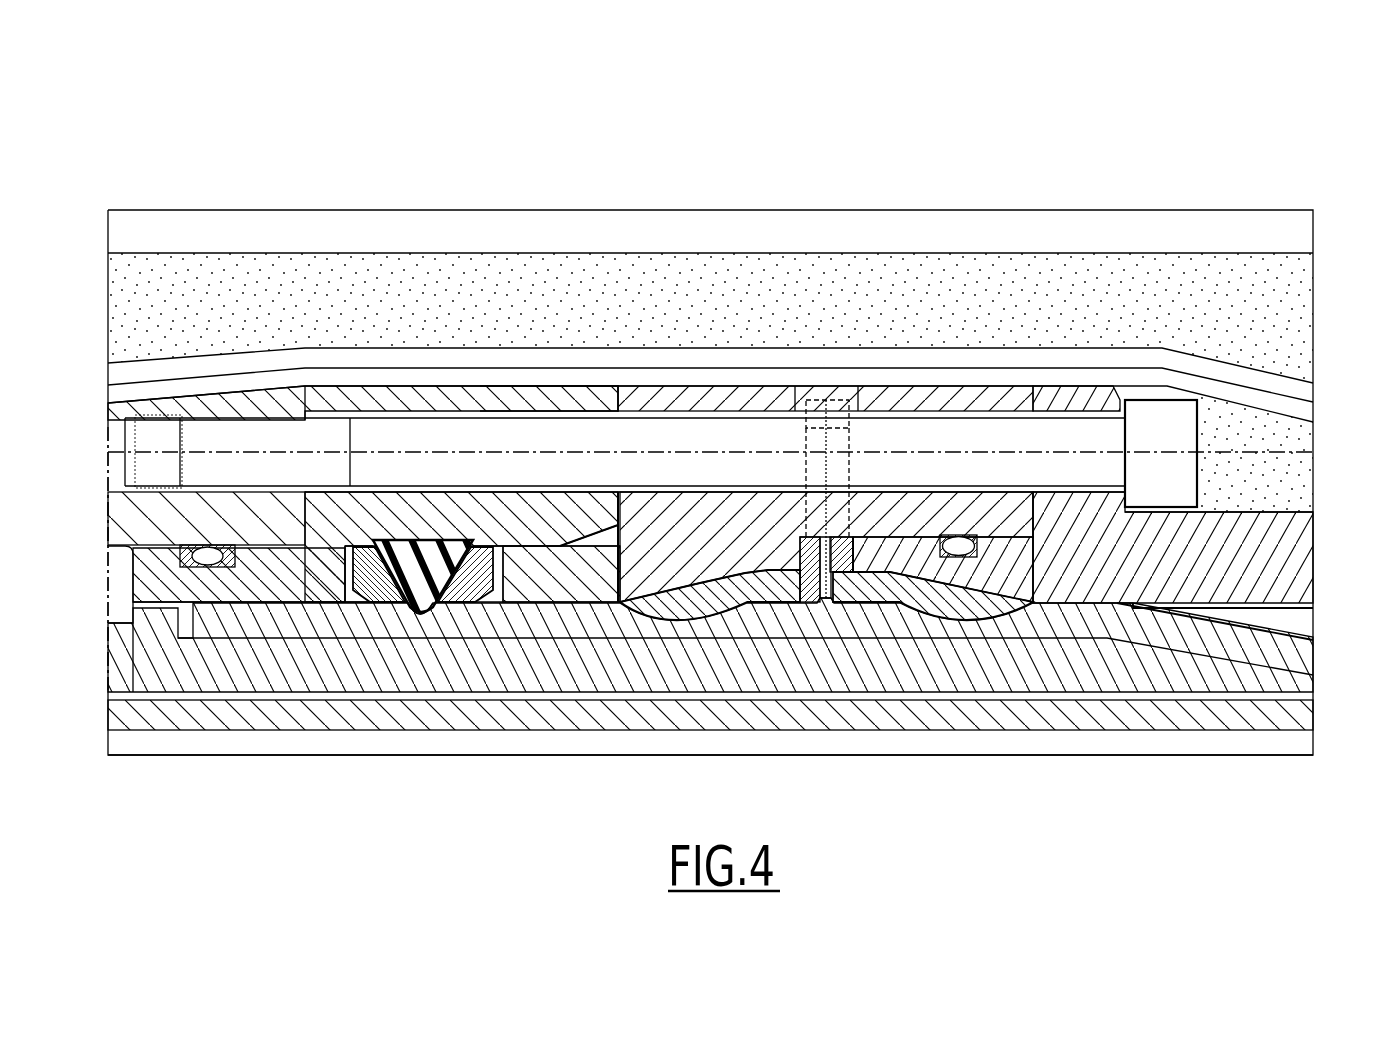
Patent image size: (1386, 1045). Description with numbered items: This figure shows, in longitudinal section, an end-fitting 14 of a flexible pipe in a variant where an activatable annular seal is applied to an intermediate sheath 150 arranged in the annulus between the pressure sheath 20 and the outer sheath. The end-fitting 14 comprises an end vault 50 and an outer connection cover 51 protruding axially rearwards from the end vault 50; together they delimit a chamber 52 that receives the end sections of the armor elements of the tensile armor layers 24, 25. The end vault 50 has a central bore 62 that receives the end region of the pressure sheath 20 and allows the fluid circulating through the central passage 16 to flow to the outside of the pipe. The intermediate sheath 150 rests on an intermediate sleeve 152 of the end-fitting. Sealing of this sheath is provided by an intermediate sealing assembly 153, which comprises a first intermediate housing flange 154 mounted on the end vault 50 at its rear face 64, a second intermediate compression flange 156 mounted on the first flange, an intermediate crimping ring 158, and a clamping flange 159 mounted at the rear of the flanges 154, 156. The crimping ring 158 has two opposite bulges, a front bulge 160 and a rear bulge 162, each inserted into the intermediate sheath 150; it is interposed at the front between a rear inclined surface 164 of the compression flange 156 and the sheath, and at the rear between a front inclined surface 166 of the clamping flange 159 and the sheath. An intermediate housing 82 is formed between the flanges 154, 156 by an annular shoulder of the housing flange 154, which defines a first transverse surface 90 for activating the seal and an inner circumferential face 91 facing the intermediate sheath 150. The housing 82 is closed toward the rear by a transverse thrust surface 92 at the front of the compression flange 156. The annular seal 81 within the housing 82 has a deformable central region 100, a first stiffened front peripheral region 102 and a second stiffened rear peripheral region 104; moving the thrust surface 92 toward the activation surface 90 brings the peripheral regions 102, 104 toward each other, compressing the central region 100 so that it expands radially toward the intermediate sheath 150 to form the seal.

The end-fitting 14 is at (1318, 124).
The outer connection cover 51 is at (457, 220).
The intermediate sealing assembly 153 is at (895, 324).
The layer of tensile armor 25 is at (1313, 390).
The layer of tensile armor 24 is at (1313, 412).
The rear face 64 is at (306, 403).
The first intermediate housing flange 154 is at (540, 400).
The second intermediate compression flange 156 is at (765, 398).
The clamping flange 159 is at (1063, 392).
The chamber 52 is at (710, 404).
The end vault 50 is at (108, 505).
The inner circumferential face 91 is at (500, 547).
The transverse thrust surface 92 is at (496, 588).
The intermediate housing 82 is at (325, 572).
The first stiffened front peripheral region 102 is at (378, 590).
The second stiffened rear peripheral region 104 is at (472, 585).
The deformable central region 100 is at (432, 540).
The first transverse surface 90 is at (368, 602).
The annular seal 81 is at (425, 640).
The rear inclined surface 164 is at (692, 598).
The front inclined surface 166 is at (967, 618).
The front bulge 160 is at (703, 622).
The rear bulge 162 is at (948, 622).
The intermediate crimping ring 158 is at (824, 625).
The intermediate sleeve 152 is at (888, 683).
The intermediate sheath 150 is at (1313, 648).
The pressure sheath 20 is at (1313, 714).
The central bore 62 is at (112, 613).
The central passage 16 is at (710, 780).